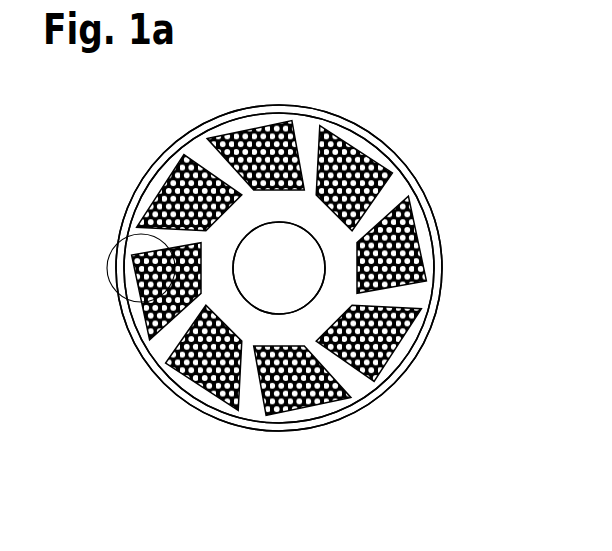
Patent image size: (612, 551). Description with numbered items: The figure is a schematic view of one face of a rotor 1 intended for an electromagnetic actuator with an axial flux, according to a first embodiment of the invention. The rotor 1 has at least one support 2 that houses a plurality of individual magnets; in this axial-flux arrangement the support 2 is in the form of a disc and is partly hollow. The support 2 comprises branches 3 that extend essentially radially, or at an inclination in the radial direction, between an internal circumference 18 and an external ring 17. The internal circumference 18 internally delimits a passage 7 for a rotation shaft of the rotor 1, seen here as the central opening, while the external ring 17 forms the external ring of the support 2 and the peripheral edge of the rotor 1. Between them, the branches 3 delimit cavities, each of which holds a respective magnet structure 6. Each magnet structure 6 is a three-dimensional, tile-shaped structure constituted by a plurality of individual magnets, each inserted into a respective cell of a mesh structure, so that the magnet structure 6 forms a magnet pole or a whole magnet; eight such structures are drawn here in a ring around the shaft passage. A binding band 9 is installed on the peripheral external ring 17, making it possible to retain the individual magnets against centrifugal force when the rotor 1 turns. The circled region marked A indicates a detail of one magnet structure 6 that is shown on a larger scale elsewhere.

The rotor 1 is at (407, 412).
The support 2 is at (398, 185).
The branches 3 is at (330, 298).
The magnet structure 6 is at (145, 322).
The central opening 7 is at (277, 270).
The binding band 9 is at (320, 114).
The external ring 17 is at (430, 263).
The internal circumference 18 is at (397, 352).
The detail A is at (118, 242).